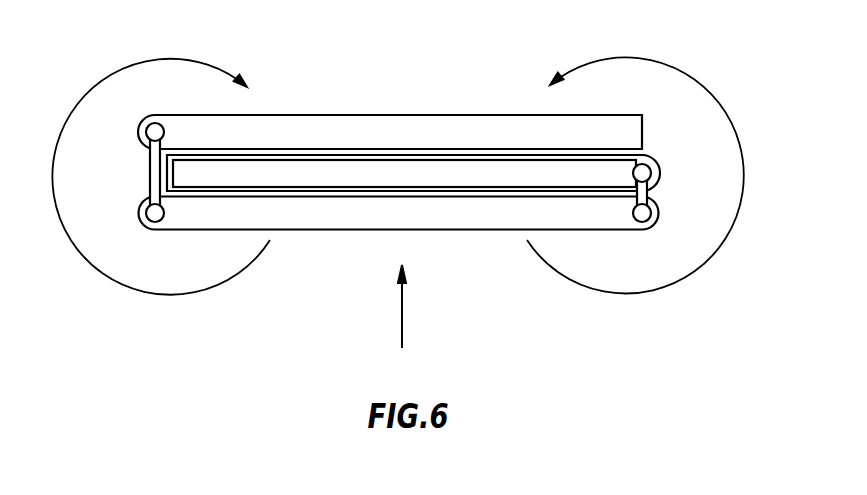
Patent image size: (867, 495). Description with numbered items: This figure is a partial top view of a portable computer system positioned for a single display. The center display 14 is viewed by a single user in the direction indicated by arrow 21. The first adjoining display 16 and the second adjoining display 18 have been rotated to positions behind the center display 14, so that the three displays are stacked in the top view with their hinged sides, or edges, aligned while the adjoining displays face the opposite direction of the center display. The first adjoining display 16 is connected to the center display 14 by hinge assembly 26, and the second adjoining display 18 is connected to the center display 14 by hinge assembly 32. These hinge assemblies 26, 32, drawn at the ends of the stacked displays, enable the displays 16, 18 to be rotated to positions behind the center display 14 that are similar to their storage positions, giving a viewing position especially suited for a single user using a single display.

The center display 14 is at (460, 210).
The first adjoining display 16 is at (612, 172).
The second adjoining display 18 is at (382, 127).
The arrow 21 is at (403, 307).
The hinge assembly 26 is at (663, 188).
The hinge assembly 32 is at (137, 168).